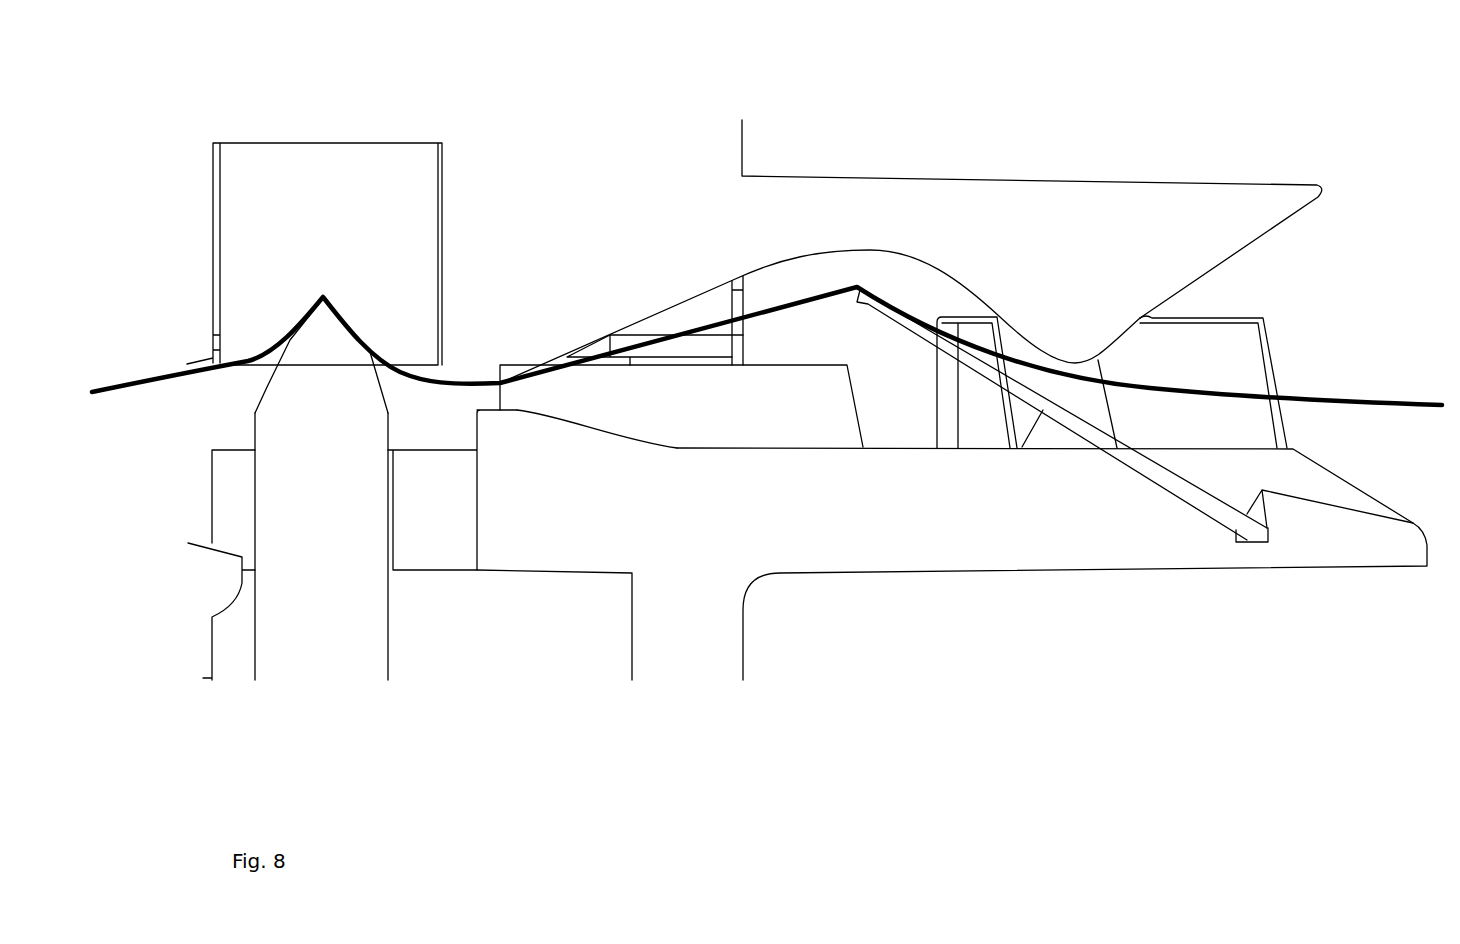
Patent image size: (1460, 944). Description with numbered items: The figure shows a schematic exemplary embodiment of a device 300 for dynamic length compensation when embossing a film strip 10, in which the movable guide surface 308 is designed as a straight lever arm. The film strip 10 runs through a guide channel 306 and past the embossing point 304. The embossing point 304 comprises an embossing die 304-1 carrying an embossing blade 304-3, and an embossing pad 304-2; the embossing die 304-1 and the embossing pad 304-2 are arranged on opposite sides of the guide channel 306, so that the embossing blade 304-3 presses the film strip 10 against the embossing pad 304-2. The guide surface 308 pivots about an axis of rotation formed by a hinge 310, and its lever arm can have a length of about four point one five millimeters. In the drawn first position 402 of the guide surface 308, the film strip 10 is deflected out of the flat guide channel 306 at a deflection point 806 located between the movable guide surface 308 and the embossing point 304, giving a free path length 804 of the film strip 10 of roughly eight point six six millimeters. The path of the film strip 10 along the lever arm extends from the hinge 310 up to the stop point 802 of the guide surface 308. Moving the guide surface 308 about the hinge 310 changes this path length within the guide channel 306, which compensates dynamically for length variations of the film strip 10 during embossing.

The device 300 is at (537, 46).
The film strip 10 is at (1400, 402).
The embossing point 304 is at (323, 131).
The embossing die 304-1 is at (324, 632).
The embossing pad 304-2 is at (398, 142).
The embossing blade 304-3 is at (333, 333).
The guide channel 306 is at (242, 407).
The guide surface 308 is at (977, 363).
The first position 402 is at (990, 432).
The hinge 310 is at (1043, 410).
The stop point of the guide surface 802 is at (846, 367).
The free path length of the film strip 804 is at (788, 298).
The deflection point of the film strip 806 is at (474, 387).